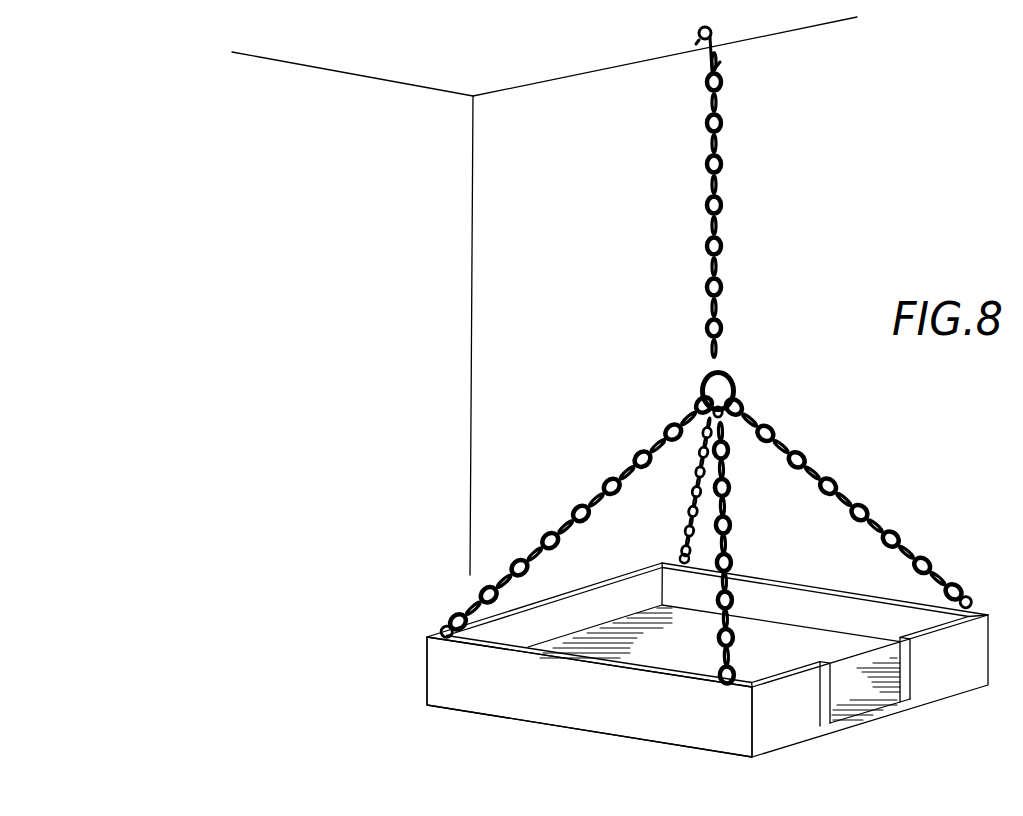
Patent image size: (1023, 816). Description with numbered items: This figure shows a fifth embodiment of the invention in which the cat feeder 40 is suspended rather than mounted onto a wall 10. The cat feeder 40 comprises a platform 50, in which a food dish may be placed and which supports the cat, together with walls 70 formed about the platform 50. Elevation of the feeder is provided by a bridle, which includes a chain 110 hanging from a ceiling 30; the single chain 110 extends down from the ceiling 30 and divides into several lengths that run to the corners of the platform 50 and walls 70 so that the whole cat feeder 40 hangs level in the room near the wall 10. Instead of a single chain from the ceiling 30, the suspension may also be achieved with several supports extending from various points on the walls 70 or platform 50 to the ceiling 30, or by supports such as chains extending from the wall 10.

The wall 10 is at (461, 335).
The ceiling 30 is at (544, 56).
The cat feeder 40 is at (686, 665).
The platform 50 is at (867, 707).
The walls 70 is at (610, 713).
The chain 110 is at (723, 256).